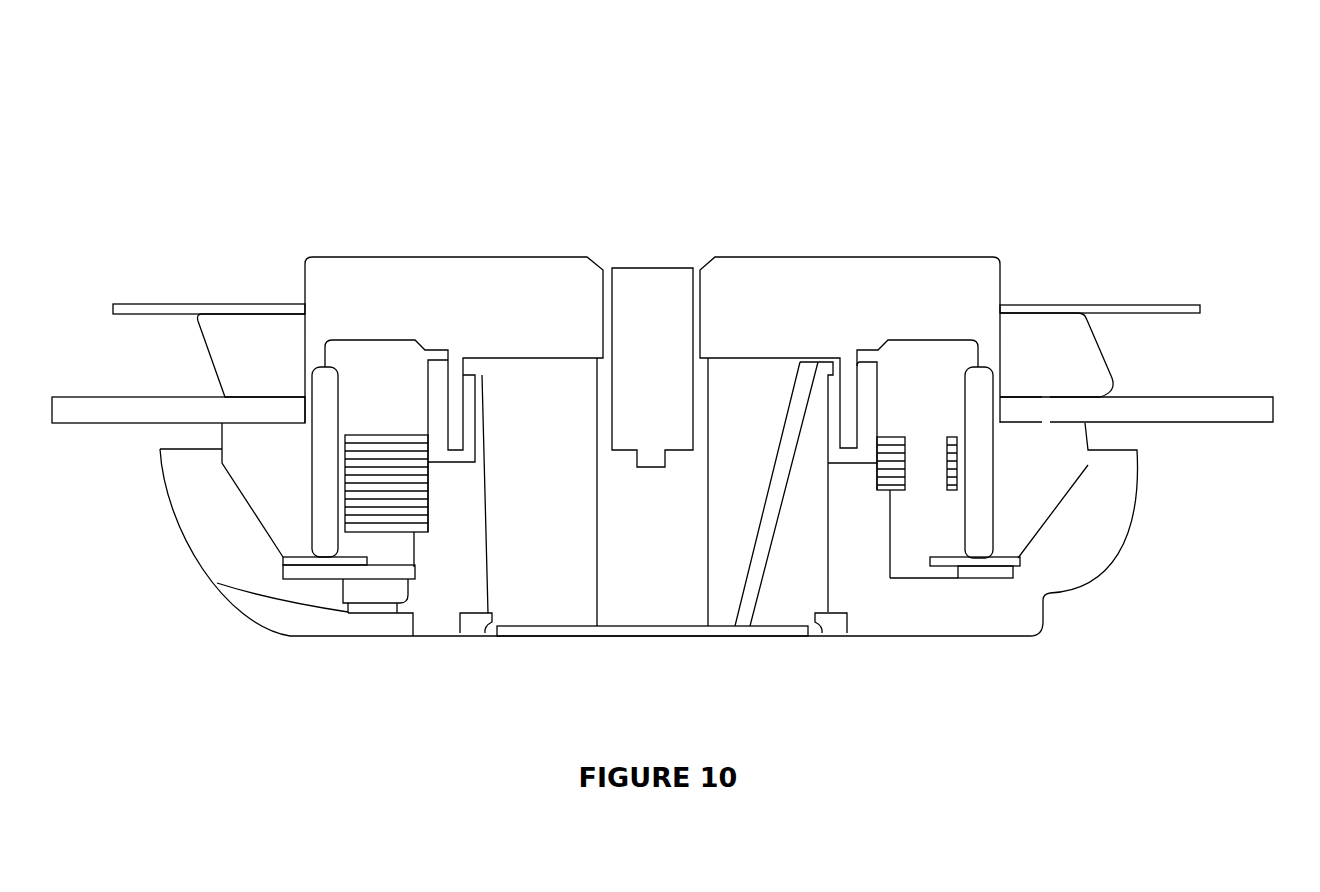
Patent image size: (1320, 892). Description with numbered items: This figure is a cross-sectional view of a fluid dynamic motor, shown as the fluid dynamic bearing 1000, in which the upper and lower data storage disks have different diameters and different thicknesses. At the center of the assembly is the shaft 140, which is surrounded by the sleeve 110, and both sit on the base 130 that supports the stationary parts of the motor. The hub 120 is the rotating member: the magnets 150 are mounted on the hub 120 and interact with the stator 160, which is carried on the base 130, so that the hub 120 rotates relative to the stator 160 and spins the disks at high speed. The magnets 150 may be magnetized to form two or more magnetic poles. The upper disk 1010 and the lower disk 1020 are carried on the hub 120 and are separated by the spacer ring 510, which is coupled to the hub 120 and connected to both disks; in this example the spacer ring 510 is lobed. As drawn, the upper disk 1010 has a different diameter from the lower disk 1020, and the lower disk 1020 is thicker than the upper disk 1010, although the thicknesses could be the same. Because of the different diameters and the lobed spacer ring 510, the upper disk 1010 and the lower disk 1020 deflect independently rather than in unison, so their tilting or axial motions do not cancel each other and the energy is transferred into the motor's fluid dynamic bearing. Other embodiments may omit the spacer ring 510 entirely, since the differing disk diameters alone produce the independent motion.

The fluid dynamic bearing 1000 is at (116, 96).
The upper disk 1010 is at (1142, 300).
The lower disk 1020 is at (136, 416).
The spacer ring 510 is at (1072, 383).
The hub 120 is at (811, 331).
The shaft 140 is at (634, 552).
The sleeve 110 is at (734, 442).
The magnets 150 is at (961, 353).
The stator 160 is at (395, 450).
The base 130 is at (884, 630).